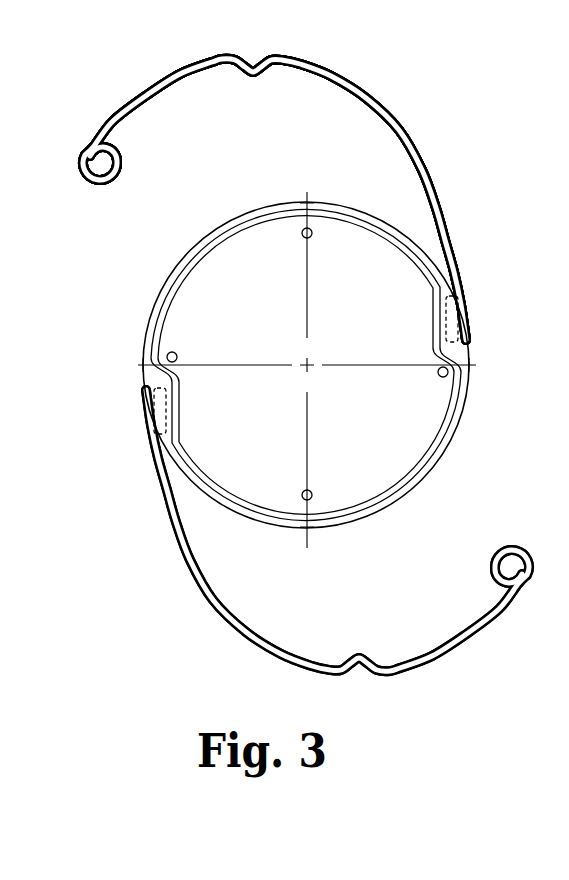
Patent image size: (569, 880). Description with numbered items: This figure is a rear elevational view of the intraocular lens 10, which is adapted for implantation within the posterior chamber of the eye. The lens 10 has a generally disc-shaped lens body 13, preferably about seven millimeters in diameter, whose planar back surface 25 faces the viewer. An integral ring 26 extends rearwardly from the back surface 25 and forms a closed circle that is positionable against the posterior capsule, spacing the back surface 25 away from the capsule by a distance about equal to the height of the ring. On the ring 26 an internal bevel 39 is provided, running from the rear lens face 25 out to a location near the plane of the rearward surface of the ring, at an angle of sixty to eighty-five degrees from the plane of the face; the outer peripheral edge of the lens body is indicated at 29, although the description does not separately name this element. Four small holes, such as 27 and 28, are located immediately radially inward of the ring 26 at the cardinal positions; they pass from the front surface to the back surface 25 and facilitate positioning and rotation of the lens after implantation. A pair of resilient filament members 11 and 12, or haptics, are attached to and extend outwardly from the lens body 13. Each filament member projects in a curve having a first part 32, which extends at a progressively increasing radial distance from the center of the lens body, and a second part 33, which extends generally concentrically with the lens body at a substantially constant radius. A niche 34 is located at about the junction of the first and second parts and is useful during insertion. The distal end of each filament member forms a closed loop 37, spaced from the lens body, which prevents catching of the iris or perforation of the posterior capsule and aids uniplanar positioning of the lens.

The intraocular lens 10 is at (282, 562).
The resilient filament member 11 is at (290, 176).
The resilient filament member 12 is at (238, 660).
The lens body 13 is at (496, 336).
The back surface 25 is at (288, 369).
The ring 26 is at (165, 307).
The hole 27 is at (312, 231).
The hole 28 is at (310, 501).
The outer peripheral edge 29 is at (191, 250).
The first part of the curve 32 is at (423, 168).
The second part of the curve 33 is at (161, 80).
The niche 34 is at (268, 79).
The closed loop 37 is at (91, 183).
The internal bevel 39 is at (242, 231).